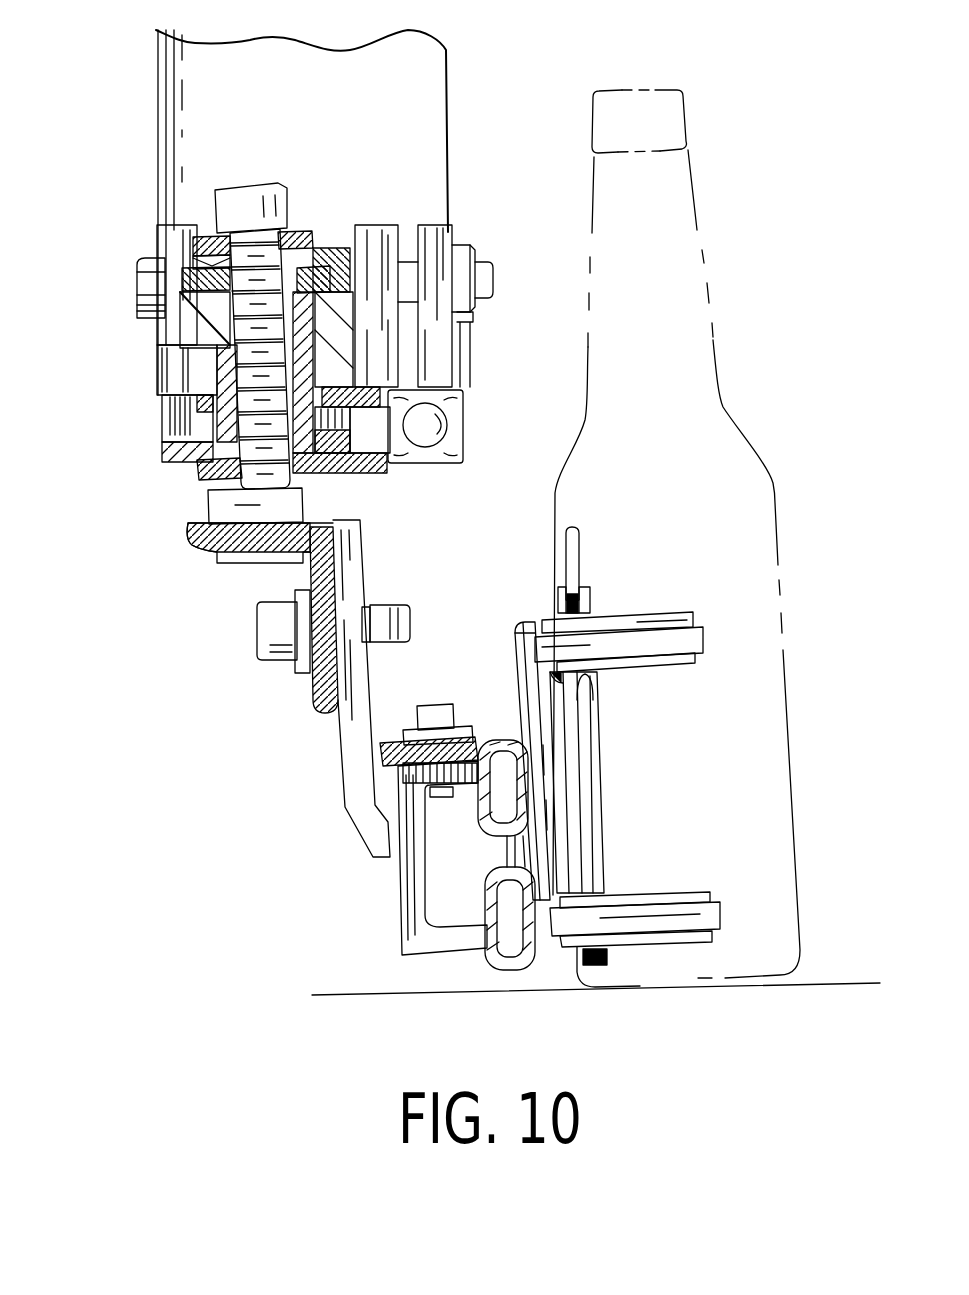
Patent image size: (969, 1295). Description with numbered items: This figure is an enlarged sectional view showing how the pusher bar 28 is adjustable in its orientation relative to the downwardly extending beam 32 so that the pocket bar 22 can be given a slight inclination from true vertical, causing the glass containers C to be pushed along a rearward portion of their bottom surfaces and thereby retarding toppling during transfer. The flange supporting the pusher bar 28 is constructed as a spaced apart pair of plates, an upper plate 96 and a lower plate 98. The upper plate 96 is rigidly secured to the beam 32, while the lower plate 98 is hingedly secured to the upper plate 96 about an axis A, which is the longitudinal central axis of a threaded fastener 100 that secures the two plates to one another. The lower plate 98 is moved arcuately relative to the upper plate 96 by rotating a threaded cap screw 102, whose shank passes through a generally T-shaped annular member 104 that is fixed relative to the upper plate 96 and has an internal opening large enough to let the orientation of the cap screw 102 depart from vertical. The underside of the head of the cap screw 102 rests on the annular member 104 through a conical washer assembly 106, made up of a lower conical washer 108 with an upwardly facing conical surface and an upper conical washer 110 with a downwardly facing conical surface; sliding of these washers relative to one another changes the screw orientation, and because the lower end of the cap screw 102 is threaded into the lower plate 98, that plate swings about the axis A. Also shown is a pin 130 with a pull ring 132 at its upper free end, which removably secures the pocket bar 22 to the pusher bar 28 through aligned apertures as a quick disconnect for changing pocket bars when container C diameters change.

The beam 32 is at (310, 119).
The threaded cap screw 102 is at (230, 187).
The upper conical washer 110 is at (195, 262).
The lower conical washer 108 is at (184, 283).
The T-shaped annular member 104 is at (167, 293).
The lower plate 98 is at (197, 472).
The pusher bar 28 is at (312, 567).
The conical washer assembly 106 is at (350, 240).
The upper plate 96 is at (365, 385).
The axis A is at (463, 414).
The threaded fastener 100 is at (463, 430).
The pull ring 132 is at (562, 560).
The pocket bar 22 is at (667, 612).
The pin 130 is at (600, 750).
The glass container C is at (777, 513).